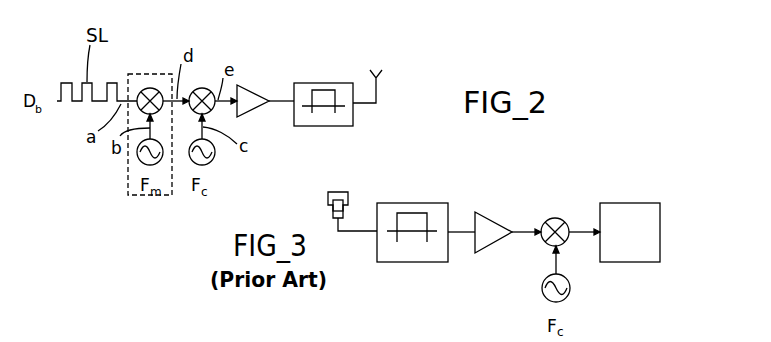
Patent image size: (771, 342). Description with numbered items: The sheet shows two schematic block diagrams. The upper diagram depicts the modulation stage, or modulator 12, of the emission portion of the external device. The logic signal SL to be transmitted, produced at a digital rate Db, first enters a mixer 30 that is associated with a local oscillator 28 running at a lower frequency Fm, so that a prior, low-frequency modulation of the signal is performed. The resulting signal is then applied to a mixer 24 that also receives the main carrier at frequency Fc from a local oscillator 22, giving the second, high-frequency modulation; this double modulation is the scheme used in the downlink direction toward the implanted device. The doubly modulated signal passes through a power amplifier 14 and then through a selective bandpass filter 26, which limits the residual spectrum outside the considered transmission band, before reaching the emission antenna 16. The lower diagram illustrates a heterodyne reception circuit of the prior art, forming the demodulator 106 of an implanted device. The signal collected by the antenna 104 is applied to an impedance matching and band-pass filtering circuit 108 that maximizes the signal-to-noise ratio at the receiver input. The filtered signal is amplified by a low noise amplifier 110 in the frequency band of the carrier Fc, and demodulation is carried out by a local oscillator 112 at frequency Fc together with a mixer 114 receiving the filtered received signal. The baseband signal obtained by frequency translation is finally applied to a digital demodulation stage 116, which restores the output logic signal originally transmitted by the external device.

In FIG. 2, the modulator 12 is at (170, 49).
In FIG. 2, the power amplifier 14 is at (257, 85).
In FIG. 2, the emission antenna 16 is at (384, 75).
In FIG. 2, the local oscillator 22 is at (214, 160).
In FIG. 2, the mixer 24 is at (203, 88).
In FIG. 2, the selective bandpass filter 26 is at (325, 83).
In FIG. 2, the local oscillator 28 is at (137, 158).
In FIG. 2, the mixer 30 is at (150, 88).
In FIG. 3, the antenna 104 is at (343, 194).
In FIG. 3, the demodulator 106 is at (556, 181).
In FIG. 3, the impedance matching and band-pass filtering circuit 108 is at (418, 203).
In FIG. 3, the low noise amplifier 110 is at (495, 213).
In FIG. 3, the local oscillator 112 is at (570, 288).
In FIG. 3, the mixer 114 is at (564, 220).
In FIG. 3, the digital demodulation stage 116 is at (655, 230).